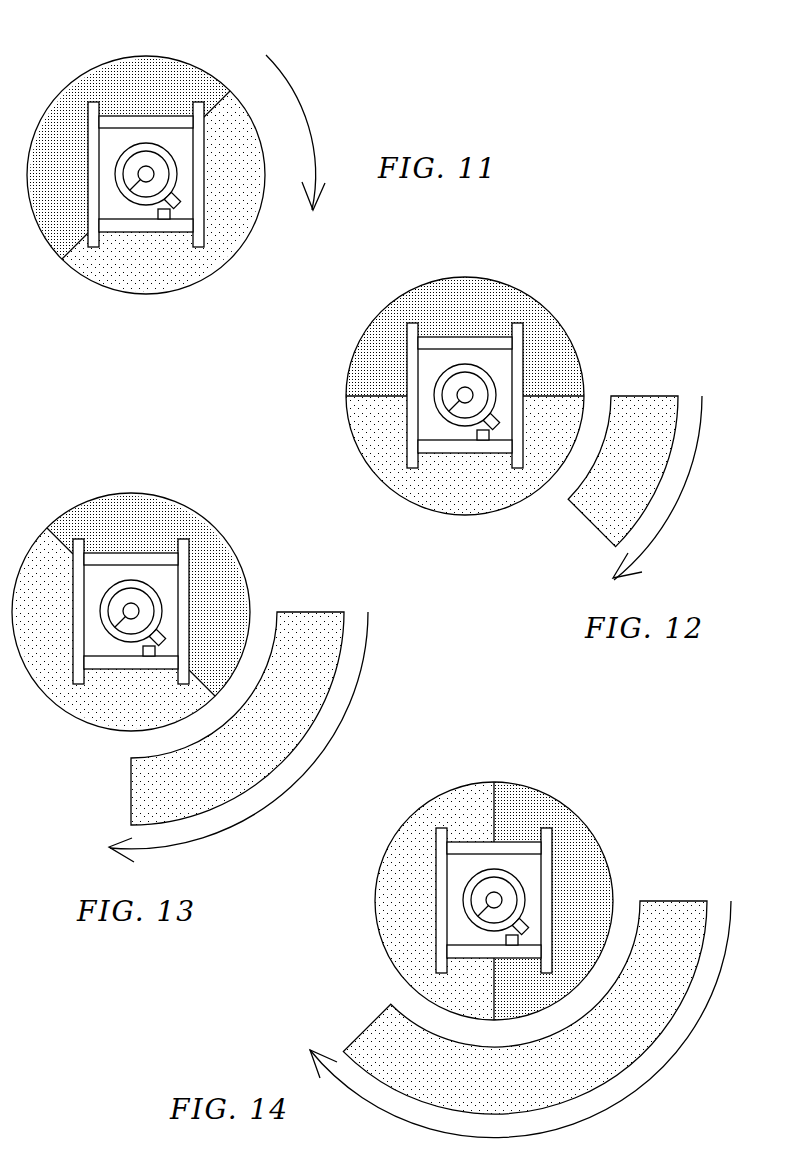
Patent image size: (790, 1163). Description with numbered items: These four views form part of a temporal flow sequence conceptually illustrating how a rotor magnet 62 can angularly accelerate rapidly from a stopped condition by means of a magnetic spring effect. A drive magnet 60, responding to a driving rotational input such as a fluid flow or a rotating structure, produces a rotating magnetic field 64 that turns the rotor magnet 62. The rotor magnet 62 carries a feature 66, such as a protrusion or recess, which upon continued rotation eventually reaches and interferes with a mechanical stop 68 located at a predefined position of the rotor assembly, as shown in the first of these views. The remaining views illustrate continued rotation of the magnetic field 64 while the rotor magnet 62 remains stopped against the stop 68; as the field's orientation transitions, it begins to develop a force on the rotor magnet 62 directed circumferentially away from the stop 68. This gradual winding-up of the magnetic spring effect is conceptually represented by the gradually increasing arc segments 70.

In FIG. 11, the drive magnet 60 is at (146, 163).
In FIG. 12, the drive magnet 60 is at (465, 384).
In FIG. 13, the drive magnet 60 is at (131, 601).
In FIG. 14, the drive magnet 60 is at (494, 890).
In FIG. 11, the rotor magnet 62 is at (207, 156).
In FIG. 12, the rotor magnet 62 is at (527, 377).
In FIG. 13, the rotor magnet 62 is at (193, 594).
In FIG. 14, the rotor magnet 62 is at (555, 882).
In FIG. 11, the rotating magnetic field 64 is at (316, 132).
In FIG. 12, the rotating magnetic field 64 is at (675, 488).
In FIG. 13, the rotating magnetic field 64 is at (262, 737).
In FIG. 14, the rotating magnetic field 64 is at (520, 1019).
In FIG. 11, the feature 66 is at (232, 225).
In FIG. 12, the feature 66 is at (518, 476).
In FIG. 13, the feature 66 is at (221, 612).
In FIG. 14, the feature 66 is at (585, 901).
In FIG. 11, the mechanical stop 68 is at (128, 271).
In FIG. 12, the mechanical stop 68 is at (452, 491).
In FIG. 13, the mechanical stop 68 is at (101, 701).
In FIG. 14, the mechanical stop 68 is at (422, 928).
In FIG. 12, the arc segments 70 is at (633, 456).
In FIG. 13, the arc segments 70 is at (248, 704).
In FIG. 14, the arc segments 70 is at (535, 992).